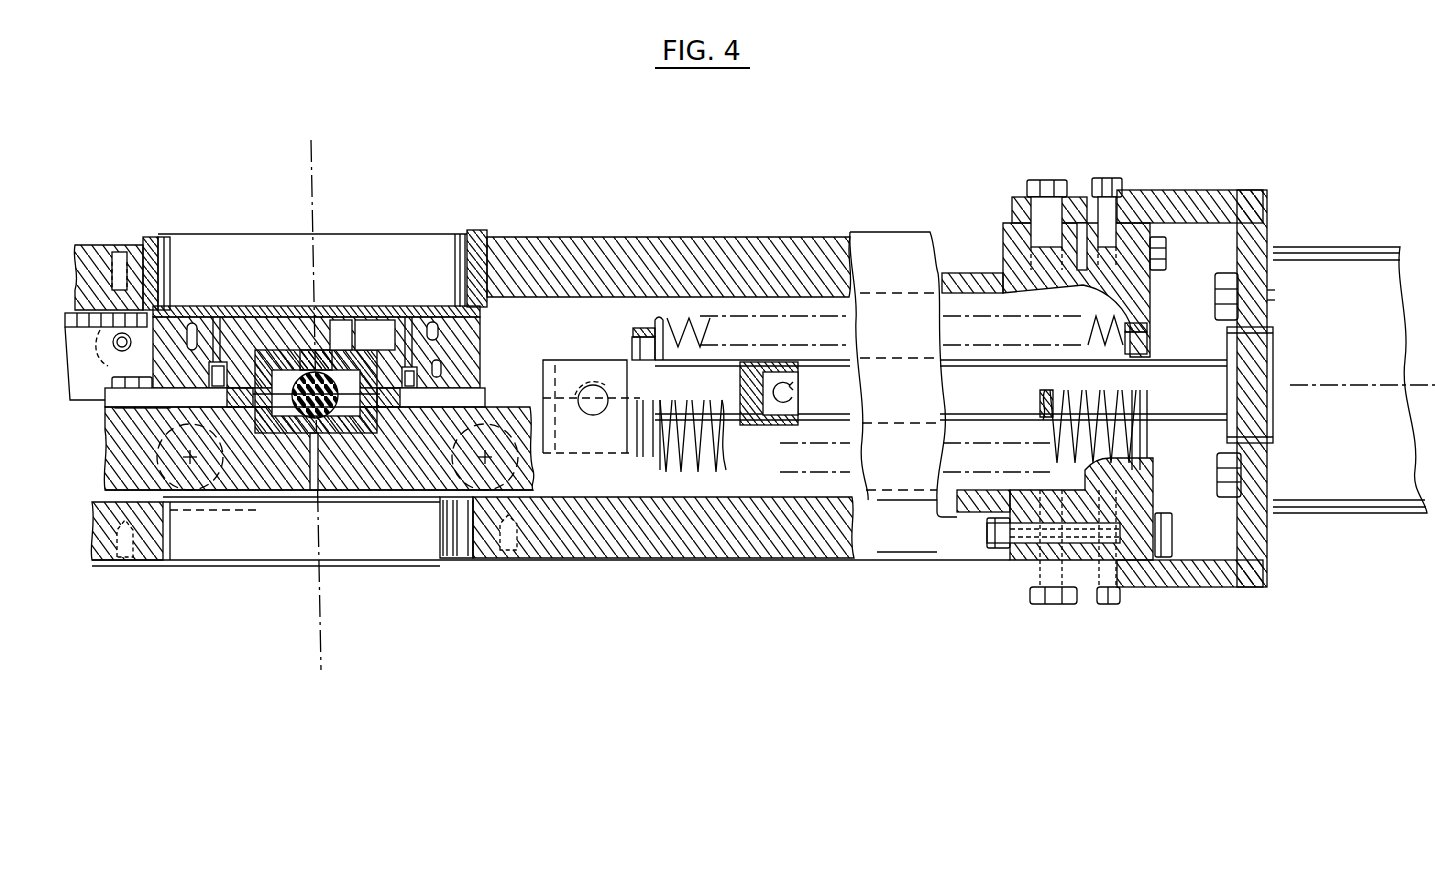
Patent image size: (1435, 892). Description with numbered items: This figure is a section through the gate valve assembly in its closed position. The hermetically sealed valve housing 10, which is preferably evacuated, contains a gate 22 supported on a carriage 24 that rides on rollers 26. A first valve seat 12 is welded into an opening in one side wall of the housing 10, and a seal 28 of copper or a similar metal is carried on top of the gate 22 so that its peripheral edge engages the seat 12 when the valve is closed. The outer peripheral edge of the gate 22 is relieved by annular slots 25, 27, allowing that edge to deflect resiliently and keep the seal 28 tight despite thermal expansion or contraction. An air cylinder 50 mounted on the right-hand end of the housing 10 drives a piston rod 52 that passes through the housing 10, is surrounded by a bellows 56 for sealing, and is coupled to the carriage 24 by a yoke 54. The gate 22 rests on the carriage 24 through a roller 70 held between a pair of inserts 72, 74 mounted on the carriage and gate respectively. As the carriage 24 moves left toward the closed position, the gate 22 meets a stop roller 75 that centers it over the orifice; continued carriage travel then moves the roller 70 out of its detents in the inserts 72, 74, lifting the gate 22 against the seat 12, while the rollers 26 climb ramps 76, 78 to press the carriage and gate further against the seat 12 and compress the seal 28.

The valve housing 10 is at (797, 537).
The first valve seat 12 is at (172, 252).
The gate 22 is at (453, 352).
The carriage 24 is at (410, 460).
The annular slot 25 is at (217, 313).
The rollers 26 is at (192, 470).
The annular slot 27 is at (437, 380).
The seal 28 is at (405, 283).
The air cylinder 50 is at (1327, 283).
The piston rod 52 is at (840, 395).
The yoke 54 is at (593, 402).
The bellows 56 is at (693, 460).
The roller 70 is at (293, 306).
The insert 72 is at (378, 308).
The insert 74 is at (343, 425).
The stop roller 75 is at (122, 355).
The ramp 76 is at (250, 498).
The ramp 78 is at (455, 497).